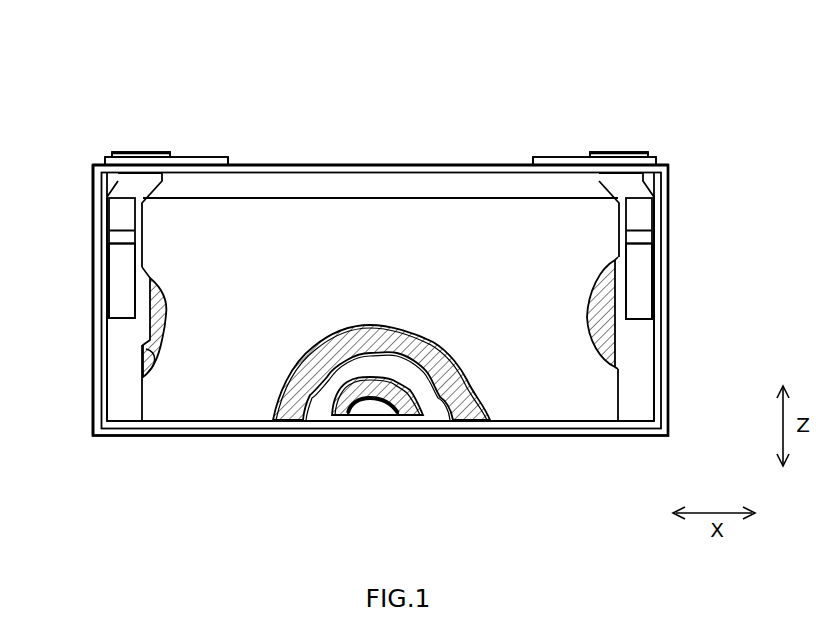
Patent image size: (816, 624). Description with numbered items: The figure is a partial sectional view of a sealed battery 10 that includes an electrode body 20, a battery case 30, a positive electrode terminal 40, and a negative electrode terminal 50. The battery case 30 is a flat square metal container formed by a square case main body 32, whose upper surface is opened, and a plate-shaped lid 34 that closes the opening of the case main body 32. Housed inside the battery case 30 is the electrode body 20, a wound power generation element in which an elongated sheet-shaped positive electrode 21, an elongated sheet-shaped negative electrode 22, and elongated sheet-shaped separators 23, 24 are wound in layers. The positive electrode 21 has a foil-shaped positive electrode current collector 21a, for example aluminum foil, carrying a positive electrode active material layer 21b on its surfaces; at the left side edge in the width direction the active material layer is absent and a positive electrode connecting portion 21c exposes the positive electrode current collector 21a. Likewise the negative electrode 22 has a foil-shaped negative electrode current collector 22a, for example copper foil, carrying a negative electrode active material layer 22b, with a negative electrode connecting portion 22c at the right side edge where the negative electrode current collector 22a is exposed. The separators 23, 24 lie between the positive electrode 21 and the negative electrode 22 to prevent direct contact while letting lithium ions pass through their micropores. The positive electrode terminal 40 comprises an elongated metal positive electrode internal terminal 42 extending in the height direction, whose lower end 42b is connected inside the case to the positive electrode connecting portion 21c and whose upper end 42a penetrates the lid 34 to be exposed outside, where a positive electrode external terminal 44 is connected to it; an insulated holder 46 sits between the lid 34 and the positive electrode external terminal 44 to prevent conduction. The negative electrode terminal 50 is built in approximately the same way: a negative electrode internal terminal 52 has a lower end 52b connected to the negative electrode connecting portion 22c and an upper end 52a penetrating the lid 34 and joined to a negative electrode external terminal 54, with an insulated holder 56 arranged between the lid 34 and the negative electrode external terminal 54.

The sealed battery 10 is at (41, 41).
The electrode body 20 is at (348, 190).
The positive electrode 21 is at (346, 416).
The positive electrode current collector 21a is at (107, 386).
The positive electrode active material layer 21b is at (167, 312).
The positive electrode connecting portion 21c is at (121, 410).
The negative electrode 22 is at (287, 421).
The negative electrode current collector 22a is at (656, 393).
The negative electrode active material layer 22b is at (592, 283).
The negative electrode connecting portion 22c is at (636, 416).
The separator 23 is at (320, 415).
The separator 24 is at (375, 413).
The battery case 30 is at (89, 159).
The case main body 32 is at (92, 210).
The lid 34 is at (413, 164).
The positive electrode terminal 40 is at (158, 135).
The positive electrode internal terminal 42 is at (118, 277).
The upper end of positive electrode internal terminal 42a is at (135, 152).
The lower end of positive electrode internal terminal 42b is at (118, 310).
The positive electrode external terminal 44 is at (185, 155).
The insulated holder 46 is at (230, 158).
The negative electrode terminal 50 is at (590, 135).
The negative electrode internal terminal 52 is at (641, 257).
The upper end of negative electrode internal terminal 52a is at (618, 152).
The lower end of negative electrode internal terminal 52b is at (641, 308).
The negative electrode external terminal 54 is at (558, 155).
The insulated holder 56 is at (531, 161).